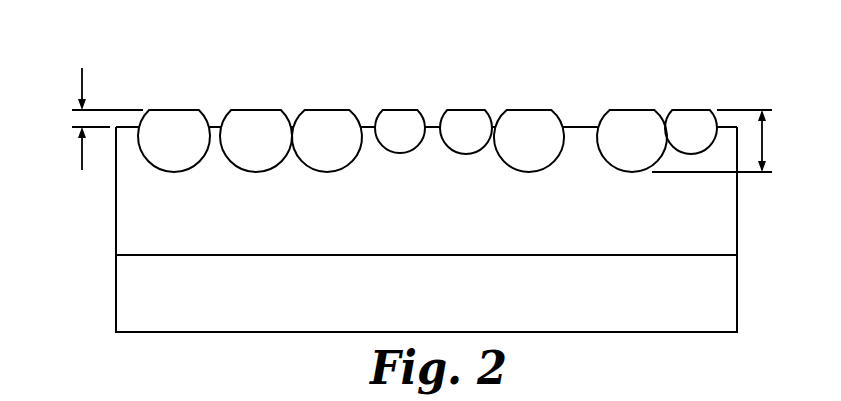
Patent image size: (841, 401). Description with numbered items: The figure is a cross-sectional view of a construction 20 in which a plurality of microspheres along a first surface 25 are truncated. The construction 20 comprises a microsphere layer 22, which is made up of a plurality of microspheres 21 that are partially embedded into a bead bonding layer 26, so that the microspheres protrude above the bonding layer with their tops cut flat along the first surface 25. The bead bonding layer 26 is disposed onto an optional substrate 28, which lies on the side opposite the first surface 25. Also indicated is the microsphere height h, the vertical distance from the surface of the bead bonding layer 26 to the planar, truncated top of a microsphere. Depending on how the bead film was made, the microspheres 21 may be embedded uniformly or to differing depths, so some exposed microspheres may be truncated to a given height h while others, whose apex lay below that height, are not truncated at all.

The construction 20 is at (679, 60).
The microspheres 21 is at (400, 128).
The microsphere layer 22 is at (765, 141).
The first surface 25 is at (258, 110).
The bead bonding layer 26 is at (720, 225).
The substrate 28 is at (720, 303).
The microsphere height h is at (82, 82).